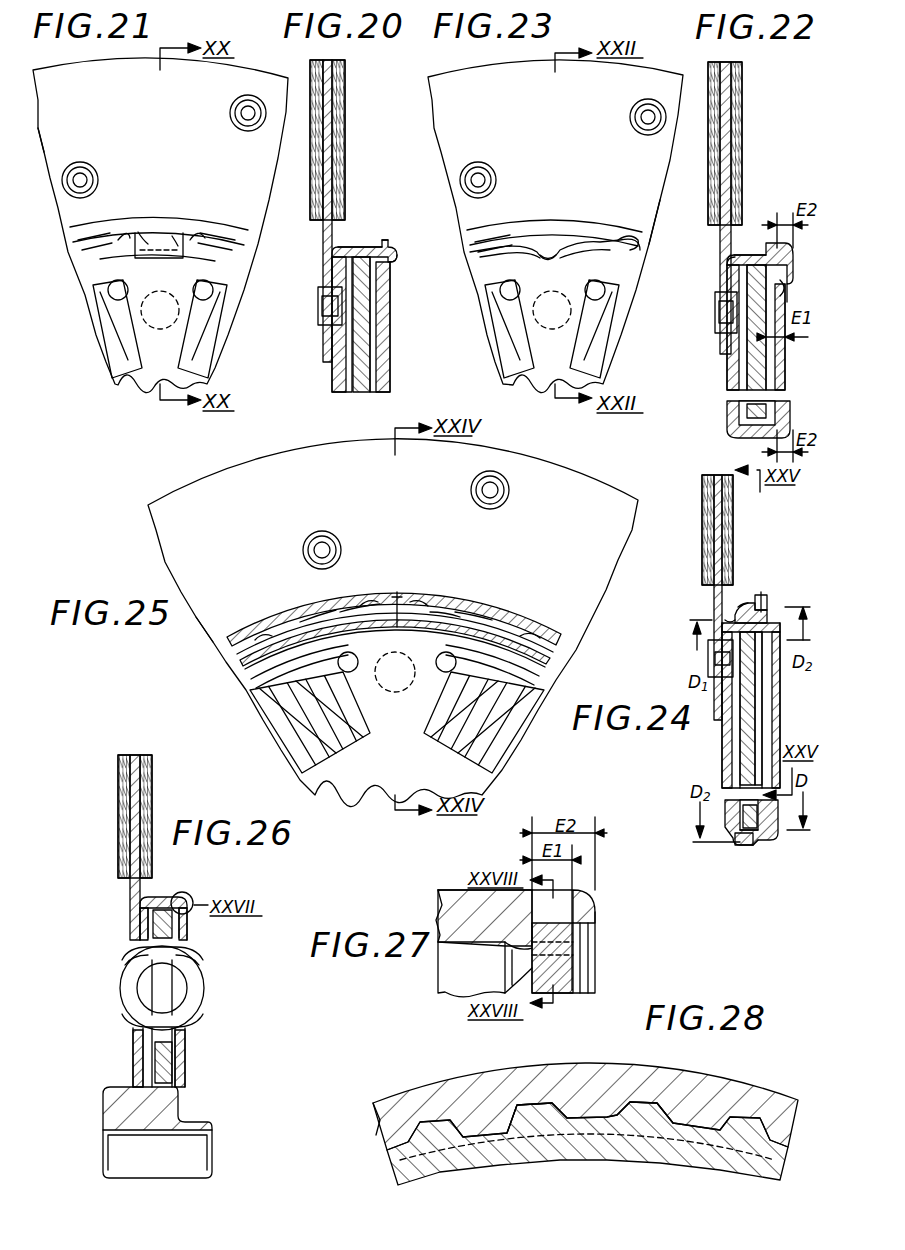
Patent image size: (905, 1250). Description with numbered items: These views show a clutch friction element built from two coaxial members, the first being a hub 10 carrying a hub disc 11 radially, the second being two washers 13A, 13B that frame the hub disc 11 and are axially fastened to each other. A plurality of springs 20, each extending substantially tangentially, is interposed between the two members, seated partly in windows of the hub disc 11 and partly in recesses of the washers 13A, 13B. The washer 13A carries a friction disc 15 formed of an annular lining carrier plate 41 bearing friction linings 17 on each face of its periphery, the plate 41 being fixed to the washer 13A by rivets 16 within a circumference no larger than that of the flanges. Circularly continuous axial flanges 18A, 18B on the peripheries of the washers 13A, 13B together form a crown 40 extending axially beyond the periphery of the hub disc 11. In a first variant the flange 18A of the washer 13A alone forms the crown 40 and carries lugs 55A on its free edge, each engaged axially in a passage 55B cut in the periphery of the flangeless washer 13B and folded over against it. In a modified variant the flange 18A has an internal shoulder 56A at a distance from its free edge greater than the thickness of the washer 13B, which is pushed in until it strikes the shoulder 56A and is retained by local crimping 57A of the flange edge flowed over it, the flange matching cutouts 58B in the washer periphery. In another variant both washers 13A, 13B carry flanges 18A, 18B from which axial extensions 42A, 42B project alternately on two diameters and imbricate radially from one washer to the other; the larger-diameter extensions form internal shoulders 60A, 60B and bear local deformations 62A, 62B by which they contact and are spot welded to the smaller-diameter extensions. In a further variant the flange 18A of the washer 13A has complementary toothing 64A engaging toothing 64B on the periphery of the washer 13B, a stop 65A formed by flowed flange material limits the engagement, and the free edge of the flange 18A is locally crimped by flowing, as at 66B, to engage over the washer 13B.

In FIG. 26, the hub 10 is at (100, 1112).
In FIG. 20, the hub disc 11 is at (365, 356).
In FIG. 22, the hub disc 11 is at (756, 327).
In FIG. 24, the hub disc 11 is at (751, 708).
In FIG. 26, the hub disc 11 is at (156, 1062).
In FIG. 20, the washer 13A is at (334, 375).
In FIG. 22, the washer 13A is at (734, 361).
In FIG. 24, the washer 13A is at (722, 737).
In FIG. 26, the washer 13A is at (138, 923).
In FIG. 21, the washer 13B is at (176, 359).
In FIG. 20, the washer 13B is at (390, 374).
In FIG. 23, the washer 13B is at (568, 360).
In FIG. 22, the washer 13B is at (775, 372).
In FIG. 25, the washer 13B is at (414, 758).
In FIG. 24, the washer 13B is at (773, 728).
In FIG. 26, the washer 13B is at (188, 935).
In FIG. 27, the washer 13B is at (577, 969).
In FIG. 28, the washer 13B is at (635, 1165).
In FIG. 21, the friction disc 15 is at (50, 170).
In FIG. 20, the friction disc 15 is at (349, 126).
In FIG. 23, the friction disc 15 is at (666, 156).
In FIG. 22, the friction disc 15 is at (747, 113).
In FIG. 25, the friction disc 15 is at (215, 634).
In FIG. 24, the friction disc 15 is at (737, 526).
In FIG. 26, the friction disc 15 is at (114, 794).
In FIG. 20, the rivets 16 is at (318, 305).
In FIG. 22, the rivets 16 is at (726, 312).
In FIG. 24, the rivets 16 is at (720, 658).
In FIG. 21, the friction linings 17 is at (173, 140).
In FIG. 20, the friction linings 17 is at (338, 160).
In FIG. 23, the friction linings 17 is at (569, 146).
In FIG. 22, the friction linings 17 is at (732, 143).
In FIG. 25, the friction linings 17 is at (409, 524).
In FIG. 24, the friction linings 17 is at (717, 523).
In FIG. 26, the friction linings 17 is at (140, 802).
In FIG. 21, the circularly continuous axial flange 18A is at (236, 262).
In FIG. 20, the circularly continuous axial flange 18A is at (360, 248).
In FIG. 23, the circularly continuous axial flange 18A is at (626, 252).
In FIG. 22, the circularly continuous axial flange 18A is at (756, 253).
In FIG. 24, the circularly continuous axial flange 18A is at (730, 622).
In FIG. 26, the circularly continuous axial flange 18A is at (180, 893).
In FIG. 27, the circularly continuous axial flange 18A is at (448, 888).
In FIG. 28, the circularly continuous axial flange 18A is at (425, 1100).
In FIG. 24, the circularly continuous axial flange 18B is at (760, 838).
In FIG. 21, the springs 20 is at (100, 338).
In FIG. 23, the springs 20 is at (500, 336).
In FIG. 25, the springs 20 is at (428, 717).
In FIG. 26, the springs 20 is at (120, 992).
In FIG. 21, the crown 40 is at (82, 266).
In FIG. 20, the crown 40 is at (348, 242).
In FIG. 23, the crown 40 is at (632, 238).
In FIG. 22, the crown 40 is at (741, 248).
In FIG. 25, the crown 40 is at (394, 630).
In FIG. 26, the crown 40 is at (155, 894).
In FIG. 27, the crown 40 is at (462, 887).
In FIG. 28, the crown 40 is at (469, 1081).
In FIG. 21, the lining carrier plate 41 is at (159, 232).
In FIG. 20, the lining carrier plate 41 is at (324, 236).
In FIG. 22, the lining carrier plate 41 is at (721, 346).
In FIG. 24, the lining carrier plate 41 is at (718, 597).
In FIG. 26, the lining carrier plate 41 is at (135, 847).
In FIG. 25, the axial extensions 42A is at (466, 620).
In FIG. 24, the axial extensions 42A is at (767, 606).
In FIG. 25, the axial extensions 42B is at (320, 620).
In FIG. 24, the axial extensions 42B is at (765, 850).
In FIG. 21, the lugs 55A is at (178, 244).
In FIG. 20, the lugs 55A is at (396, 257).
In FIG. 21, the passages 55B is at (145, 240).
In FIG. 20, the passages 55B is at (386, 240).
In FIG. 23, the shoulder 56A is at (626, 262).
In FIG. 22, the shoulder 56A is at (725, 262).
In FIG. 23, the local crimping 57A is at (553, 255).
In FIG. 22, the local crimping 57A is at (800, 285).
In FIG. 22, the cutouts 58B is at (802, 299).
In FIG. 24, the shoulder 60A is at (733, 624).
In FIG. 24, the shoulder 60B is at (755, 848).
In FIG. 25, the deformations 62A is at (420, 612).
In FIG. 24, the deformations 62A is at (740, 620).
In FIG. 25, the deformations 62B is at (258, 640).
In FIG. 24, the deformations 62B is at (738, 838).
In FIG. 28, the complementary toothing 64A is at (555, 1115).
In FIG. 27, the toothing 64B is at (573, 943).
In FIG. 28, the toothing 64B is at (671, 1113).
In FIG. 27, the stop 65A is at (515, 960).
In FIG. 27, the crimping 66B is at (590, 912).